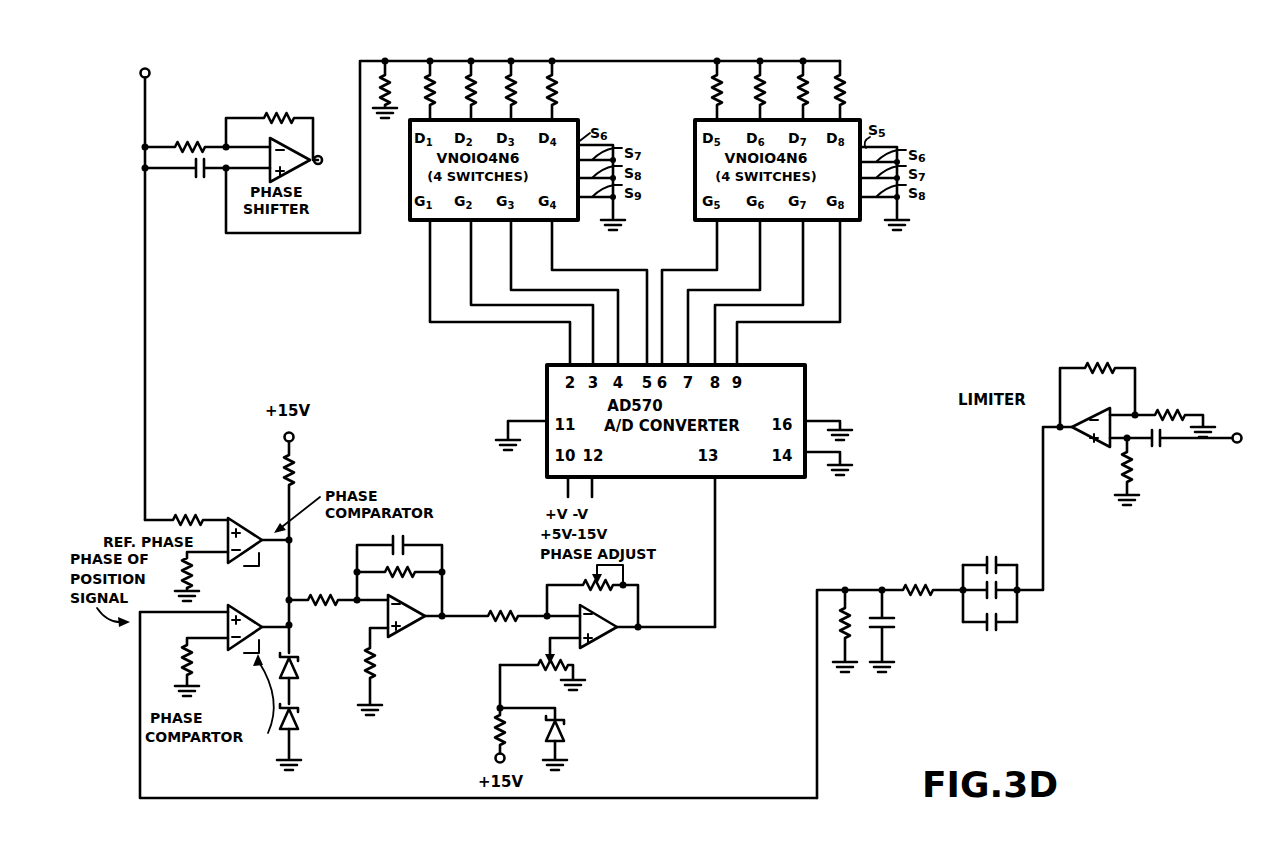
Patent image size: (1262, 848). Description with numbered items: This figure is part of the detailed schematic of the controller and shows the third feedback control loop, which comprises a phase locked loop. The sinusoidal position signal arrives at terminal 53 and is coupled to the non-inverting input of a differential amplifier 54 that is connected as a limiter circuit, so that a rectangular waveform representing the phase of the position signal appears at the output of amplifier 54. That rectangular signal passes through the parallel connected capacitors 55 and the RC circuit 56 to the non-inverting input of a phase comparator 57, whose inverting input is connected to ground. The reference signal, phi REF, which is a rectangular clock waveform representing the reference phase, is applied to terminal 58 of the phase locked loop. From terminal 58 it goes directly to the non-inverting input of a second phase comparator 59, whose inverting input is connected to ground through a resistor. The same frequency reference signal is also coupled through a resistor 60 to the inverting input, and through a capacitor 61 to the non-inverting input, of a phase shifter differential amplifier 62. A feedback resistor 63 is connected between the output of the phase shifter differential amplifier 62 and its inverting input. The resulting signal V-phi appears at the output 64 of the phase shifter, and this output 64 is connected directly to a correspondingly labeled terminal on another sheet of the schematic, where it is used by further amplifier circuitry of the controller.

The terminal 53 is at (1235, 433).
The differential amplifier 54 is at (1103, 386).
The parallel connected capacitors 55 is at (996, 626).
The RC circuit 56 is at (882, 572).
The phase comparator 57 is at (266, 616).
The terminal 58 is at (141, 77).
The second phase comparator 59 is at (262, 506).
The resistor 60 is at (190, 141).
The capacitor 61 is at (197, 176).
The phase shifter differential amplifier 62 is at (279, 143).
The feedback resistor 63 is at (293, 114).
The output 64 is at (321, 168).